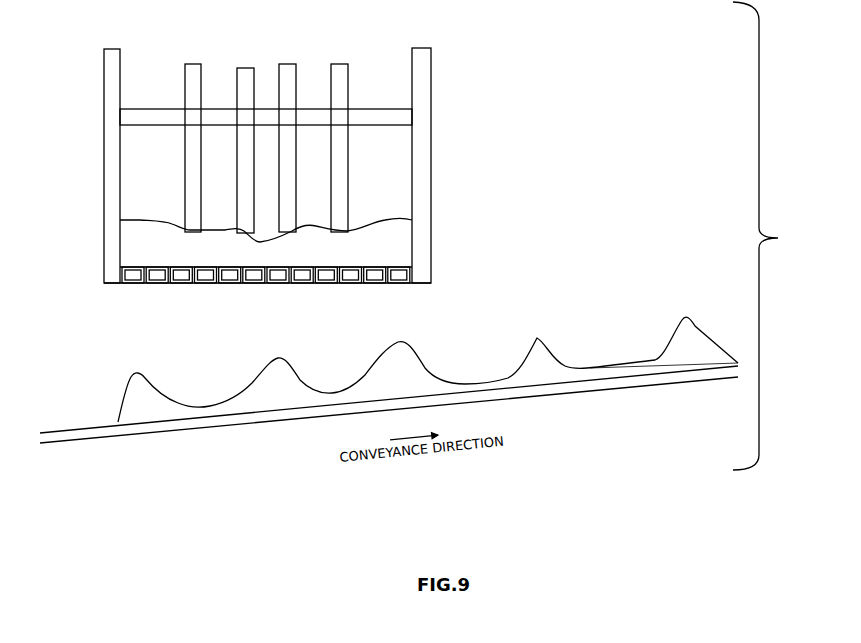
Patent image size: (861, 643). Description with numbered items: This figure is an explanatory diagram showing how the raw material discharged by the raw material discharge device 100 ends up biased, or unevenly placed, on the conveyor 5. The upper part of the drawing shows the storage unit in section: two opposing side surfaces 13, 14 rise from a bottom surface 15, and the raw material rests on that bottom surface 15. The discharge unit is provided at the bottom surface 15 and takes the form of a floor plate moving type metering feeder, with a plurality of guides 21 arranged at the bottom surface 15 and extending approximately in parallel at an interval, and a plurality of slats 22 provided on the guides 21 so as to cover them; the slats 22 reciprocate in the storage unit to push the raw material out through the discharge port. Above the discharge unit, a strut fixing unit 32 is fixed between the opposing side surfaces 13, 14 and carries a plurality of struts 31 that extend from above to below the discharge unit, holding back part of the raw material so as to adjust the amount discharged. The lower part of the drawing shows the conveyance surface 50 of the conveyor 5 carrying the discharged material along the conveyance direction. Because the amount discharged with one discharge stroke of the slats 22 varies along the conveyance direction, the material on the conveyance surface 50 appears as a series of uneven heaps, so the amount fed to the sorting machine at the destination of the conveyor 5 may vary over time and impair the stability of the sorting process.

The conveyor 5 is at (244, 423).
The side surface 13 is at (118, 137).
The side surface 14 is at (413, 155).
The bottom surface 15 is at (325, 283).
The guides 21 is at (431, 282).
The slats 22 is at (413, 267).
The struts 31 is at (190, 83).
The strut fixing unit 32 is at (163, 117).
The conveyance surface 50 is at (645, 374).
The raw material discharge device 100 is at (778, 238).